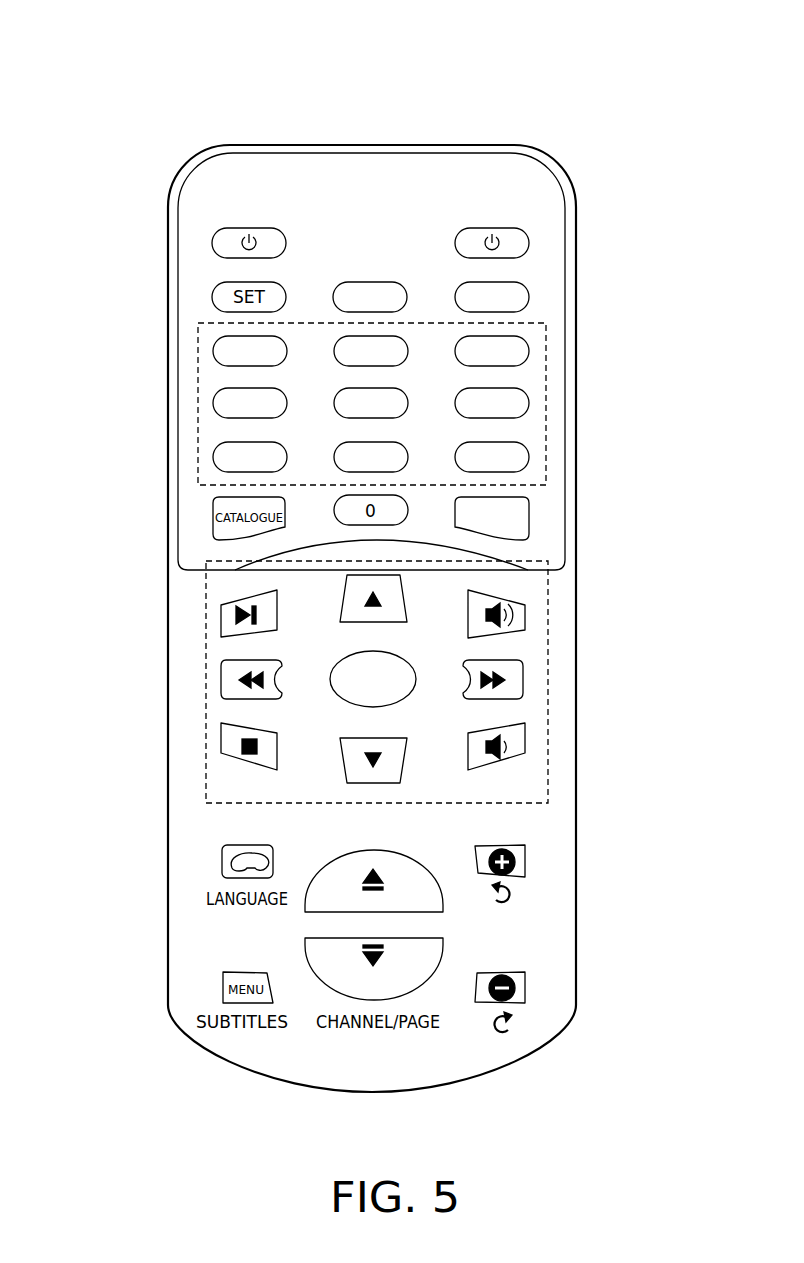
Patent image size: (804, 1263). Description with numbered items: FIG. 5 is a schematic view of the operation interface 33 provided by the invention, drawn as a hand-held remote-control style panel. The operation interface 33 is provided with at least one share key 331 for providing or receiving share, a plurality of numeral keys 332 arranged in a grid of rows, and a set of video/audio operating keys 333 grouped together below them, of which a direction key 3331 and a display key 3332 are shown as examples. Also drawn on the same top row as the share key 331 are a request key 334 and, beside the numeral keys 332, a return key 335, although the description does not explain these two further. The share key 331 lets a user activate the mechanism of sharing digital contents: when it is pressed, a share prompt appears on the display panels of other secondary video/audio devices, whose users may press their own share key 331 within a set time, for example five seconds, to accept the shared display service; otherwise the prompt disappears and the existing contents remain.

The operation interface 33 is at (347, 144).
The share key 331 is at (518, 294).
The numeral keys 332 is at (547, 383).
The video/audio operating keys 333 is at (548, 668).
The direction key 3331 is at (516, 664).
The display key 3332 is at (226, 620).
The request key 334 is at (372, 284).
The return key 335 is at (518, 510).